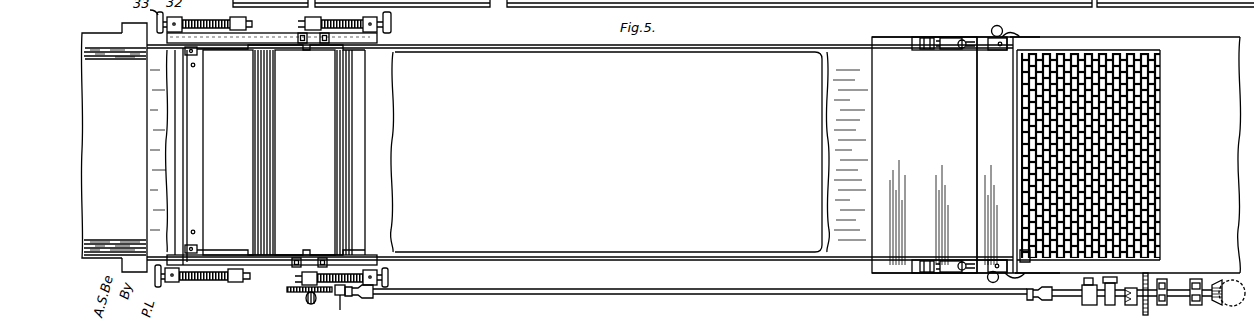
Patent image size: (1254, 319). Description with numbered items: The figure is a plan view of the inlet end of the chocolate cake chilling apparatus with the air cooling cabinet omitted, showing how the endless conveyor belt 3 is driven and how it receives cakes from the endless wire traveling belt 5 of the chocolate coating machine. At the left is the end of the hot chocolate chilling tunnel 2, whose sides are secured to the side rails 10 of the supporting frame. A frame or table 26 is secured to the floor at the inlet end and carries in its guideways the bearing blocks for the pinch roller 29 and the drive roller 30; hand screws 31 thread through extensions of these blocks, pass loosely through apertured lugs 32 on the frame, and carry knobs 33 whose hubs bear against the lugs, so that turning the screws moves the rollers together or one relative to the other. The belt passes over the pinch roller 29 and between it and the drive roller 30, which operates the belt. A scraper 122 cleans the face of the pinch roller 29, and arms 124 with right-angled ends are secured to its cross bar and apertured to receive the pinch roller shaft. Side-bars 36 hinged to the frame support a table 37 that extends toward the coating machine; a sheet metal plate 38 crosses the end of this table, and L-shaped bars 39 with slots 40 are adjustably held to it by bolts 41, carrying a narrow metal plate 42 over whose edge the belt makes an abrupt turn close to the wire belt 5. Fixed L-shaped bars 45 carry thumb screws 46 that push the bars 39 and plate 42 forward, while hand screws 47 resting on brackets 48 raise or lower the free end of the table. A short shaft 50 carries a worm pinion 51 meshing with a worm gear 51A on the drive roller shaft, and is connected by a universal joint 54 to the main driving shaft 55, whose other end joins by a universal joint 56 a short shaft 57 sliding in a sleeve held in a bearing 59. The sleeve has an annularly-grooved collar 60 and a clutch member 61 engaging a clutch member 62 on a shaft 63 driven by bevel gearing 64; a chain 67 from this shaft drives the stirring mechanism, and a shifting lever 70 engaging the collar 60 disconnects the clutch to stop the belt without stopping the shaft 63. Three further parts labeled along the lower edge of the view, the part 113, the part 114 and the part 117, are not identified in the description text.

The hot chocolate chilling tunnel 2 is at (113, 145).
The endless conveyor belt 3 is at (608, 152).
The endless wire traveling belt 5 is at (1158, 148).
The side rails 10 is at (86, 33).
The frame or table 26 is at (268, 35).
The pinch roller 29 is at (228, 152).
The drive roller 30 is at (310, 152).
The hand screws 31 is at (200, 22).
The apertured lugs 32 is at (388, 14).
The knobs 33 is at (145, 7).
The side-bars 36 is at (521, 47).
The table 37 is at (391, 152).
The sheet metal plate 38 is at (924, 155).
The L-shaped bars 39 is at (991, 26).
The slots 40 is at (957, 37).
The bolts 41 is at (961, 49).
The narrow metal plate 42 is at (997, 155).
The L-shaped bars 45 is at (927, 50).
The thumb screws 46 is at (928, 37).
The hand screws 47 is at (993, 50).
The brackets 48 is at (1012, 36).
The short shaft 50 is at (346, 302).
The worm pinion 51 is at (308, 304).
The worm gear 51A is at (297, 300).
The universal joint 54 is at (363, 296).
The main driving shaft 55 is at (594, 289).
The universal joint 56 is at (1038, 300).
The short shaft 57 is at (1082, 296).
The bearing 59 is at (1082, 283).
The annularly-grooved collar 60 is at (1110, 305).
The clutch member 61 is at (1135, 305).
The clutch member 62 is at (1167, 305).
The shaft 63 is at (1197, 305).
The bevel gearing 64 is at (1218, 305).
The chain 67 is at (1135, 283).
The shifting lever 70 is at (1148, 274).
The shaft section 113 is at (775, 313).
The shaft section 114 is at (672, 313).
The shaft section 117 is at (598, 317).
The scraper 122 is at (195, 160).
The arms 124 is at (215, 62).